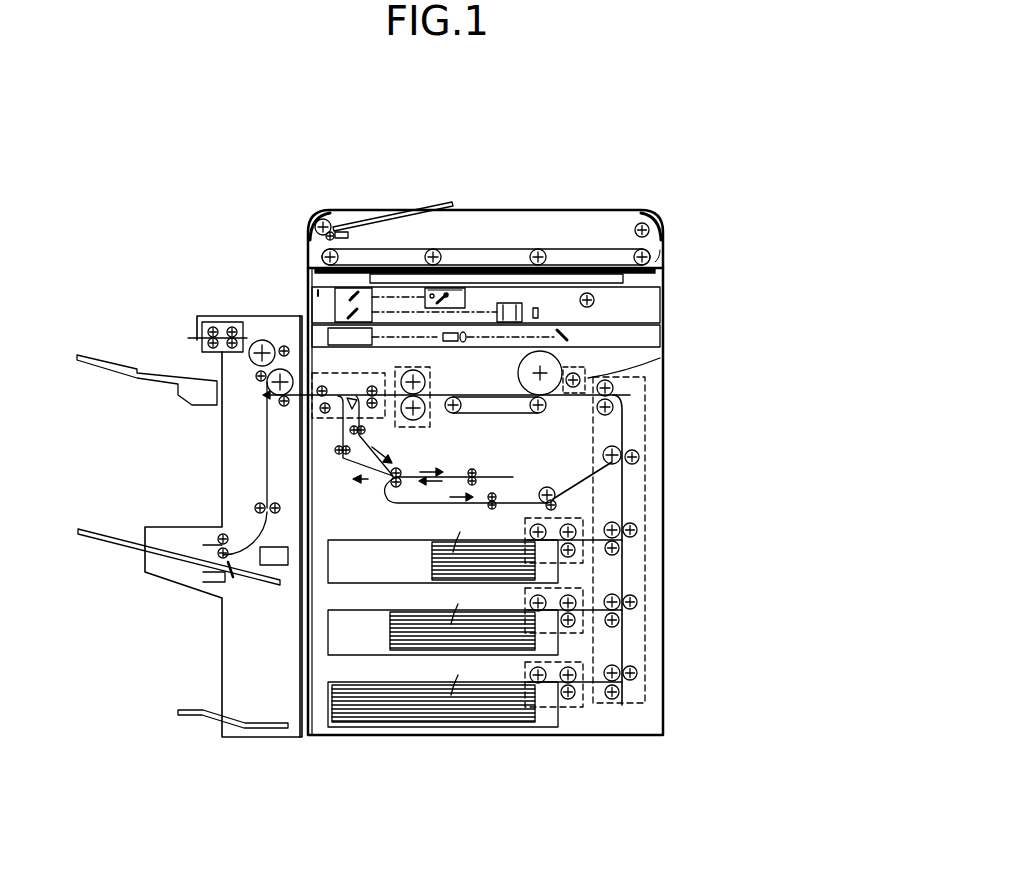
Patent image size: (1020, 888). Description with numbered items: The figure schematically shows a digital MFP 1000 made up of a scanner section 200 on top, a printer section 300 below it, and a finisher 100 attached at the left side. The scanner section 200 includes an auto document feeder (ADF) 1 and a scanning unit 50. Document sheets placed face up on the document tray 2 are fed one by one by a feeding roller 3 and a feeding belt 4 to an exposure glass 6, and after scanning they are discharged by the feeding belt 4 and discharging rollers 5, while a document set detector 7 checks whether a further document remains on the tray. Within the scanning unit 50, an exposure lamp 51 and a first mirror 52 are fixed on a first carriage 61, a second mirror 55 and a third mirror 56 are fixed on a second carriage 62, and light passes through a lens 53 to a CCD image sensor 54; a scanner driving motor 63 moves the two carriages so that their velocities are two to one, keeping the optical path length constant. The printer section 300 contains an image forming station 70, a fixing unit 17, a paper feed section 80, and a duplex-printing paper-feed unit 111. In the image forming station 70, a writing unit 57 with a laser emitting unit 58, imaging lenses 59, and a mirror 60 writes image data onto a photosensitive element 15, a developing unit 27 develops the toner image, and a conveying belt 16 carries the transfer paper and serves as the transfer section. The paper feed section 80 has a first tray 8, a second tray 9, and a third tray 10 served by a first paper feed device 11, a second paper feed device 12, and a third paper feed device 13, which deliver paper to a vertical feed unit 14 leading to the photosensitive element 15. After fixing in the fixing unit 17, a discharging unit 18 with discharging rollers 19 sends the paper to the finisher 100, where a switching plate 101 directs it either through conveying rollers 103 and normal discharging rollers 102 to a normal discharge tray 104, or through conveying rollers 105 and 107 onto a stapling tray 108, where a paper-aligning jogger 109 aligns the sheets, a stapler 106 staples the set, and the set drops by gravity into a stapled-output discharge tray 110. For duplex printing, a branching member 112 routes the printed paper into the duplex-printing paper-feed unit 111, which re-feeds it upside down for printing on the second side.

The digital MFP 1000 is at (705, 158).
The scanner section 200 is at (680, 222).
The printer section 300 is at (680, 469).
The finisher 100 is at (222, 665).
The auto document feeder (ADF) 1 is at (662, 262).
The document tray 2 is at (405, 210).
The feeding roller 3 is at (330, 218).
The feeding belt 4 is at (490, 250).
The discharging rollers 5 is at (638, 225).
The exposure glass 6 is at (655, 277).
The document set detector 7 is at (350, 236).
The first tray 8 is at (365, 572).
The second tray 9 is at (365, 641).
The third tray 10 is at (370, 712).
The first paper feed device 11 is at (570, 563).
The second paper feed device 12 is at (570, 633).
The third paper feed device 13 is at (570, 705).
The vertical feed unit 14 is at (645, 430).
The photosensitive element 15 is at (518, 368).
The conveying belt 16 is at (545, 412).
The fixing unit 17 is at (395, 372).
The discharging unit 18 is at (350, 375).
The discharging rollers 19 is at (301, 440).
The developing unit 27 is at (662, 360).
The scanning unit 50 is at (660, 298).
The exposure lamp 51 is at (450, 290).
The first mirror 52 is at (465, 300).
The lens 53 is at (522, 305).
The CCD image sensor 54 is at (540, 314).
The second mirror 55 is at (322, 287).
The third mirror 56 is at (337, 318).
The writing unit 57 is at (660, 332).
The laser emitting unit 58 is at (327, 334).
The imaging lenses 59 is at (462, 348).
The mirror 60 is at (568, 336).
The first carriage 61 is at (438, 296).
The second carriage 62 is at (337, 300).
The scanner driving motor 63 is at (595, 300).
The image forming station 70 is at (537, 419).
The paper feed section 80 is at (652, 531).
The switching plate 101 is at (278, 396).
The normal discharging rollers 102 is at (262, 367).
The conveying rollers 103 is at (213, 322).
The normal discharge tray 104 is at (92, 355).
The conveying rollers 105 is at (258, 506).
The stapler 106 is at (258, 572).
The conveying rollers 107 is at (218, 542).
The stapling tray 108 is at (92, 530).
The paper-aligning jogger 109 is at (203, 578).
The stapled-output discharge tray 110 is at (180, 712).
The duplex-printing paper-feed unit 111 is at (410, 503).
The branching member 112 is at (335, 442).